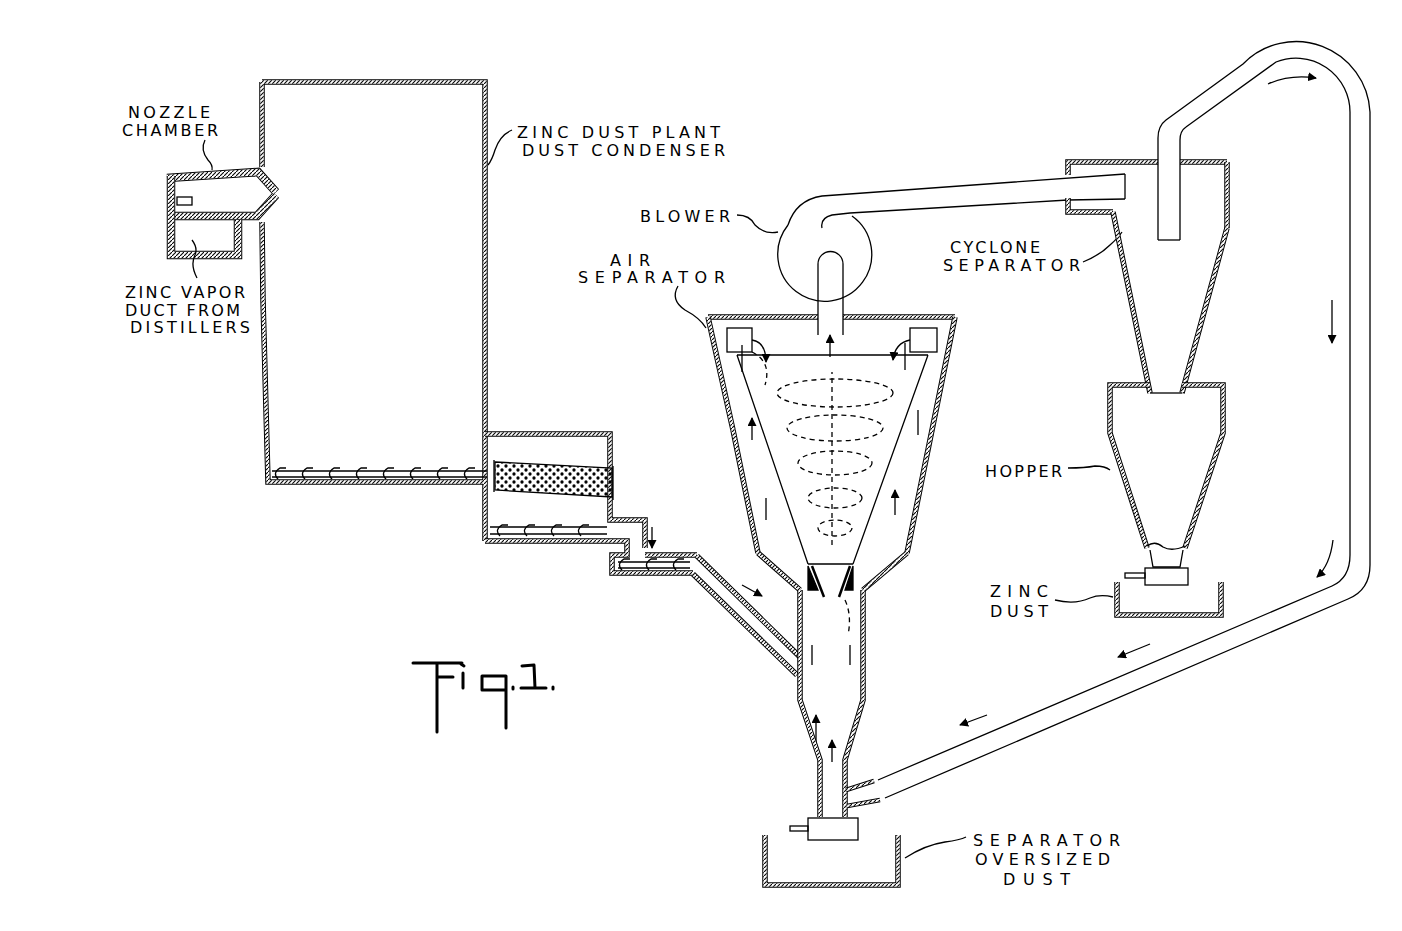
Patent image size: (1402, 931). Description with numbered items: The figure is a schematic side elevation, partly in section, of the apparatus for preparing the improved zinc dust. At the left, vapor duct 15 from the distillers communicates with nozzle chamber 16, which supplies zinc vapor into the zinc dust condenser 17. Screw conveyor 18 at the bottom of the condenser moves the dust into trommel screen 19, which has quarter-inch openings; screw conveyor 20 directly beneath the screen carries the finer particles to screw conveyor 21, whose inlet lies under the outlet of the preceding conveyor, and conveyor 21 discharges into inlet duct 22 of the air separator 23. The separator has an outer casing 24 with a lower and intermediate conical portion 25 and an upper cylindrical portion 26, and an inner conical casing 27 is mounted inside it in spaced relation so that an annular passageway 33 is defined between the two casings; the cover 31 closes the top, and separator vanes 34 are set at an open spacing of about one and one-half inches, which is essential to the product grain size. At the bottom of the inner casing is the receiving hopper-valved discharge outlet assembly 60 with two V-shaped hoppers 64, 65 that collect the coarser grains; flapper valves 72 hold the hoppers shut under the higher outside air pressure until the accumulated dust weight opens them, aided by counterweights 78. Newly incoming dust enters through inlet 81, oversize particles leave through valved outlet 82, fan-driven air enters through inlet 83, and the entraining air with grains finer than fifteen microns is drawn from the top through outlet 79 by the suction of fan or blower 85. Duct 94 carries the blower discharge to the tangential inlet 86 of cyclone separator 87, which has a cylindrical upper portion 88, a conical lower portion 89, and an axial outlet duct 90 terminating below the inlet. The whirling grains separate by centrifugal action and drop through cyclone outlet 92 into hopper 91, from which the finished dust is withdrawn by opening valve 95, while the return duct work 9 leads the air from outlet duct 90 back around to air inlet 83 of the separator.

The vapor duct 15 is at (168, 242).
The nozzle chamber 16 is at (234, 185).
The zinc dust condenser 17 is at (430, 88).
The screw conveyor 18 is at (373, 468).
The trommel screen 19 is at (551, 462).
The screw conveyor 20 is at (548, 547).
The screw conveyor 21 is at (648, 584).
The inlet duct 22 is at (728, 605).
The air separator 23 is at (731, 468).
The outer casing 24 is at (724, 421).
The lower and intermediate conical portion 25 is at (745, 515).
The upper cylindrical portion 26 is at (710, 338).
The inner conical casing 27 is at (915, 412).
The cover 31 is at (945, 322).
The annular passageway 33 is at (908, 512).
The separator vanes 34 is at (745, 338).
The receiving hopper-valved discharge outlet assembly 60 is at (856, 582).
The hopper 64 is at (806, 598).
The hopper 65 is at (843, 610).
The flapper valves 72 is at (810, 576).
The counterweights 78 is at (803, 590).
The outlet 79 is at (835, 315).
The inlet 81 is at (787, 665).
The outlet 82 is at (827, 838).
The inlet 83 is at (860, 788).
The fan or blower 85 is at (853, 256).
The inlet 86 is at (1128, 186).
The cyclone separator 87 is at (1215, 183).
The cylindrical upper portion 88 is at (1225, 213).
The conical lower portion 89 is at (1200, 315).
The outlet duct or conduit 90 is at (1175, 231).
The hopper 91 is at (1222, 472).
The cyclone outlet 92 is at (1172, 396).
The duct or conduit 94 is at (950, 192).
The valve 95 is at (1176, 578).
The return air conduit 9 is at (1372, 245).